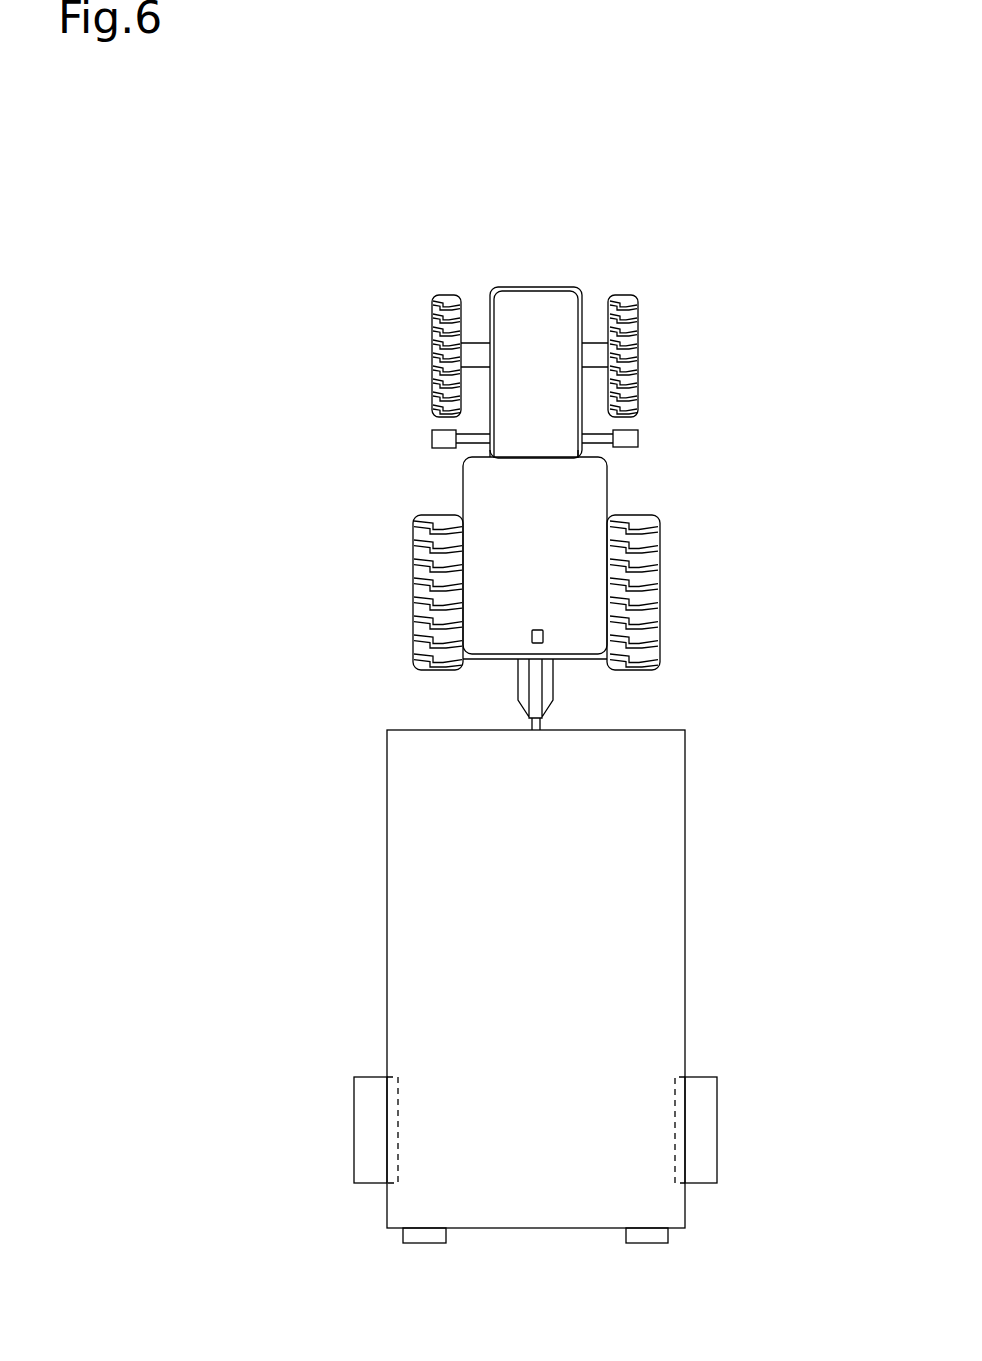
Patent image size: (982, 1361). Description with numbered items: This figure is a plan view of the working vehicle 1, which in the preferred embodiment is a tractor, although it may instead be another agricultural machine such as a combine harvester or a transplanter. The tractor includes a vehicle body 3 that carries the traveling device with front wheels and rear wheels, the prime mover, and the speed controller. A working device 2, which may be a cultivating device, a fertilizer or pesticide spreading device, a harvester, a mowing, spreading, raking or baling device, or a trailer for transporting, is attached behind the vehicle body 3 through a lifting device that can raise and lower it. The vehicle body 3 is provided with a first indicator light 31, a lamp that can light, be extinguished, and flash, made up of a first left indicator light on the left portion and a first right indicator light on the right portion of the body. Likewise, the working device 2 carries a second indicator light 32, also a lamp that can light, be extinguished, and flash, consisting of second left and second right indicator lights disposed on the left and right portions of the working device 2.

The working vehicle 1 is at (579, 276).
The working device 2 is at (611, 492).
The vehicle body 3 is at (689, 793).
The first indicator light 31 is at (443, 437).
The second indicator light 32 is at (424, 1243).